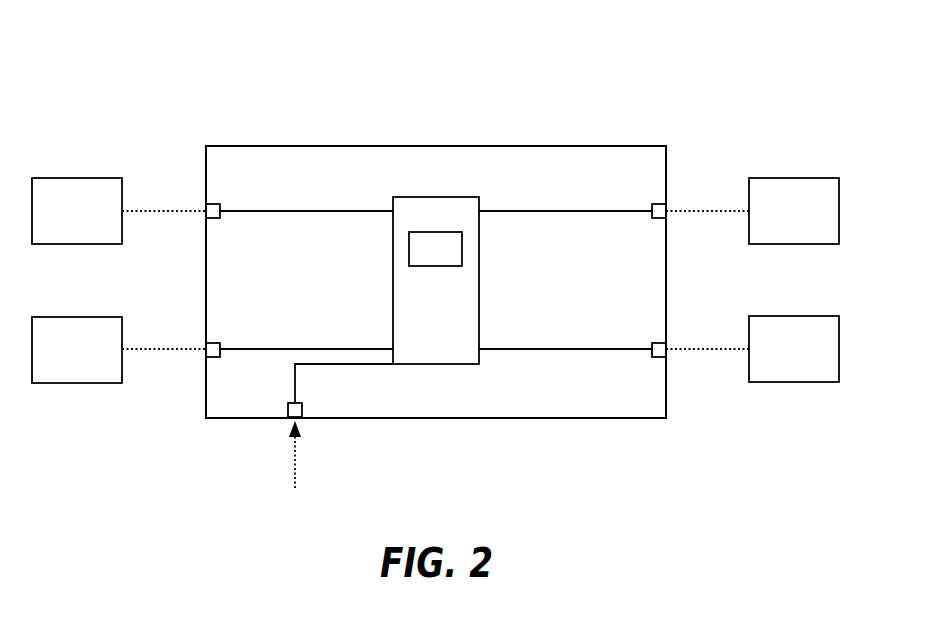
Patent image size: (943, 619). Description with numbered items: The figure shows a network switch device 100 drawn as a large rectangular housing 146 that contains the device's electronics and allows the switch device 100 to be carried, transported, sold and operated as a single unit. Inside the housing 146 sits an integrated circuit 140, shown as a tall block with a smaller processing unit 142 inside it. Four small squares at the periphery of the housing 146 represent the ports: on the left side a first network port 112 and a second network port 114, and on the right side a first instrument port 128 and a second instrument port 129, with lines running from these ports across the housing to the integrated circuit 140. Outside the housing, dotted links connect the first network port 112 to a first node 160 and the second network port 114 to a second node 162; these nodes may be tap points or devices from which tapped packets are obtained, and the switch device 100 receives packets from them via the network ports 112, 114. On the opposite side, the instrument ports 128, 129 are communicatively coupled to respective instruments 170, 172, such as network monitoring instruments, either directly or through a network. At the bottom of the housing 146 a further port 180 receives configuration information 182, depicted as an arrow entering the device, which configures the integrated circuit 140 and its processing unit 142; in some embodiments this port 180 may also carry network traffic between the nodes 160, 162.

The switch device 100 is at (108, 84).
The first network port 112 is at (205, 209).
The second network port 114 is at (205, 352).
The first instrument port 128 is at (667, 209).
The second instrument port 129 is at (667, 352).
The integrated circuit 140 is at (412, 197).
The processing unit 142 is at (462, 247).
The housing 146 is at (300, 146).
The first node 160 is at (75, 178).
The second node 162 is at (75, 383).
The instrument 170 is at (800, 178).
The instrument 172 is at (800, 382).
The port 180 is at (292, 420).
The configuration information 182 is at (296, 460).